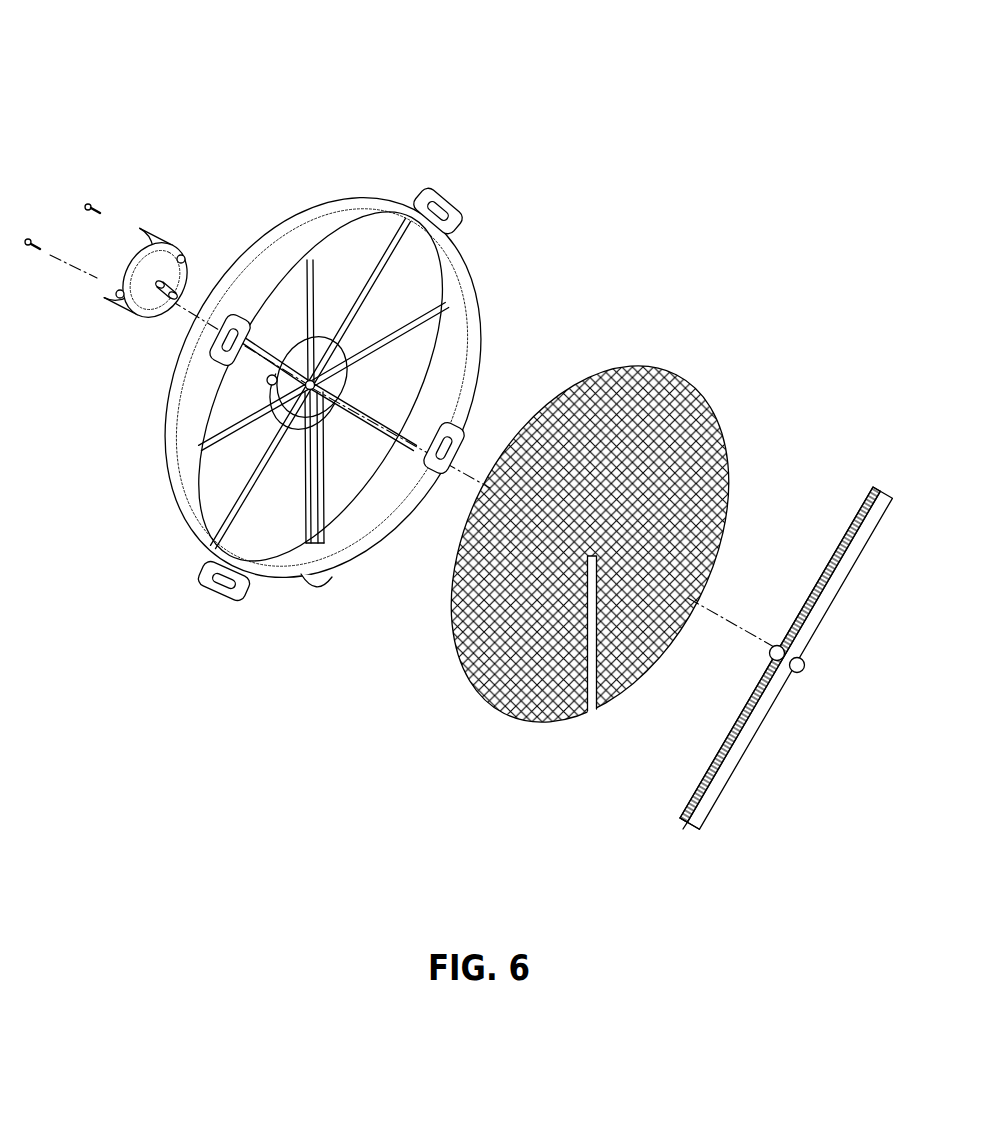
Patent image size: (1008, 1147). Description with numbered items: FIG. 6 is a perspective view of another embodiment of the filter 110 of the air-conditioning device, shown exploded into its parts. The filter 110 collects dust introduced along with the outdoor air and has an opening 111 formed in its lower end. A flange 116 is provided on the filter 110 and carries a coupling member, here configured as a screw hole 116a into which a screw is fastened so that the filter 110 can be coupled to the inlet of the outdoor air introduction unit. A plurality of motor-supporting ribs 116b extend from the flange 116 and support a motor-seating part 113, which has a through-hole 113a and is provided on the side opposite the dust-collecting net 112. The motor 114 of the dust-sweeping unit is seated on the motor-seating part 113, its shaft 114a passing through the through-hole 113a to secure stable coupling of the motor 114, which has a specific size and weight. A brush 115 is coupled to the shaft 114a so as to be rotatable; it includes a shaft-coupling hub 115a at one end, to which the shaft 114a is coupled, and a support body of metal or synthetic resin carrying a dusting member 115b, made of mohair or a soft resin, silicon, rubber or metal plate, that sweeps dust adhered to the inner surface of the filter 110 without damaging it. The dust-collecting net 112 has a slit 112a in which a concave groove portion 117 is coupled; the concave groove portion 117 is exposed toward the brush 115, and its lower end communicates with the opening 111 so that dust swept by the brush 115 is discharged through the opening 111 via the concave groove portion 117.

The filter 110 is at (512, 37).
The opening 111 is at (314, 590).
The dust-collecting net 112 is at (690, 400).
The slit 112a is at (596, 712).
The motor-seating part 113 is at (345, 357).
The through-hole 113a is at (316, 385).
The motor 114 is at (133, 240).
The shaft 114a is at (140, 312).
The brush 115 is at (888, 492).
The shaft-coupling hub 115a is at (805, 666).
The dusting member 115b is at (720, 758).
The flange 116 is at (345, 210).
The screw hole 116a is at (455, 206).
The motor-supporting ribs 116b is at (228, 448).
The concave groove portion 117 is at (316, 468).